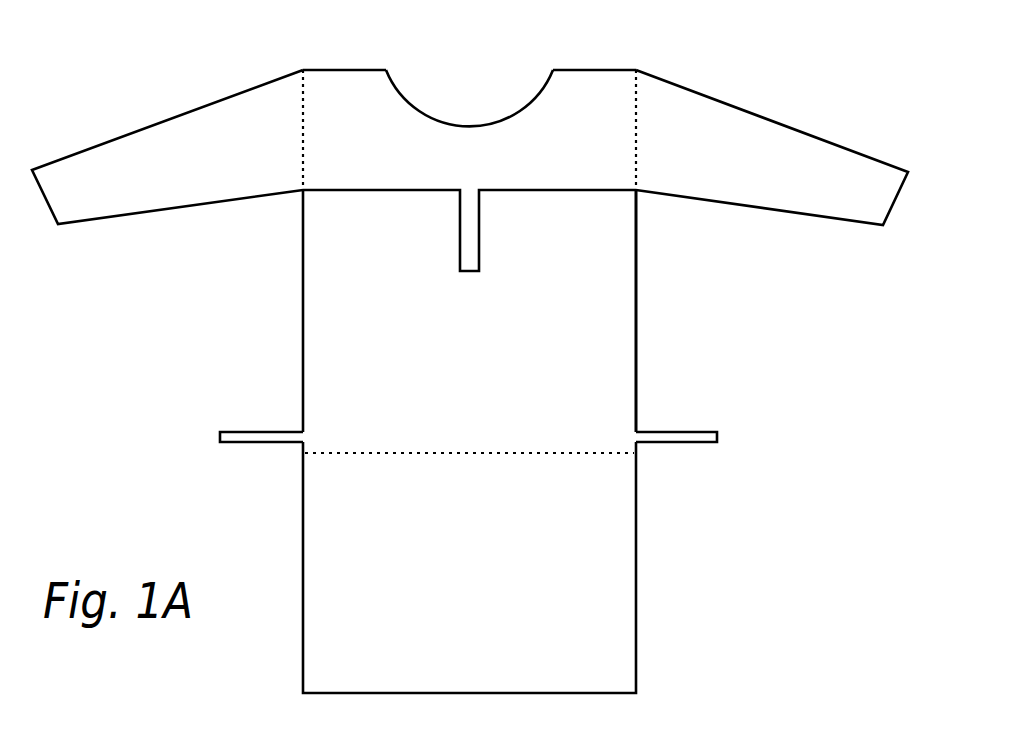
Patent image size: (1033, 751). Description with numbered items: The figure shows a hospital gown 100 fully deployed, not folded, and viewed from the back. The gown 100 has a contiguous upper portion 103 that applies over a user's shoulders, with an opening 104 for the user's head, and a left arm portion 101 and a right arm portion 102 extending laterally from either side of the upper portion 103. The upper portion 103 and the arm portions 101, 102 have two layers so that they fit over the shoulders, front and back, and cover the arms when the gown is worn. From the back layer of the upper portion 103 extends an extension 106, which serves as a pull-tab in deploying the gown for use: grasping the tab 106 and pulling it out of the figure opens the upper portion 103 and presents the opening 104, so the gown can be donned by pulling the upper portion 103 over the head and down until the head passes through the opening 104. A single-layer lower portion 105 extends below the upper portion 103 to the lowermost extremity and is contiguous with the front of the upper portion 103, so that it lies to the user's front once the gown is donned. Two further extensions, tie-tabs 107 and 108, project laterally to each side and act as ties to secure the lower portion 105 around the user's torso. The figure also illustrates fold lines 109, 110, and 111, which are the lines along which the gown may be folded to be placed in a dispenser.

The hospital gown 100 is at (212, 297).
The left arm portion 101 is at (170, 118).
The right arm portion 102 is at (763, 117).
The upper portion 103 is at (578, 80).
The opening 104 is at (453, 80).
The lower portion 105 is at (638, 262).
The extension 106 is at (460, 232).
The tie-tab 107 is at (267, 443).
The tie-tab 108 is at (676, 443).
The fold line 109 is at (303, 100).
The fold line 110 is at (636, 115).
The fold line 111 is at (443, 453).